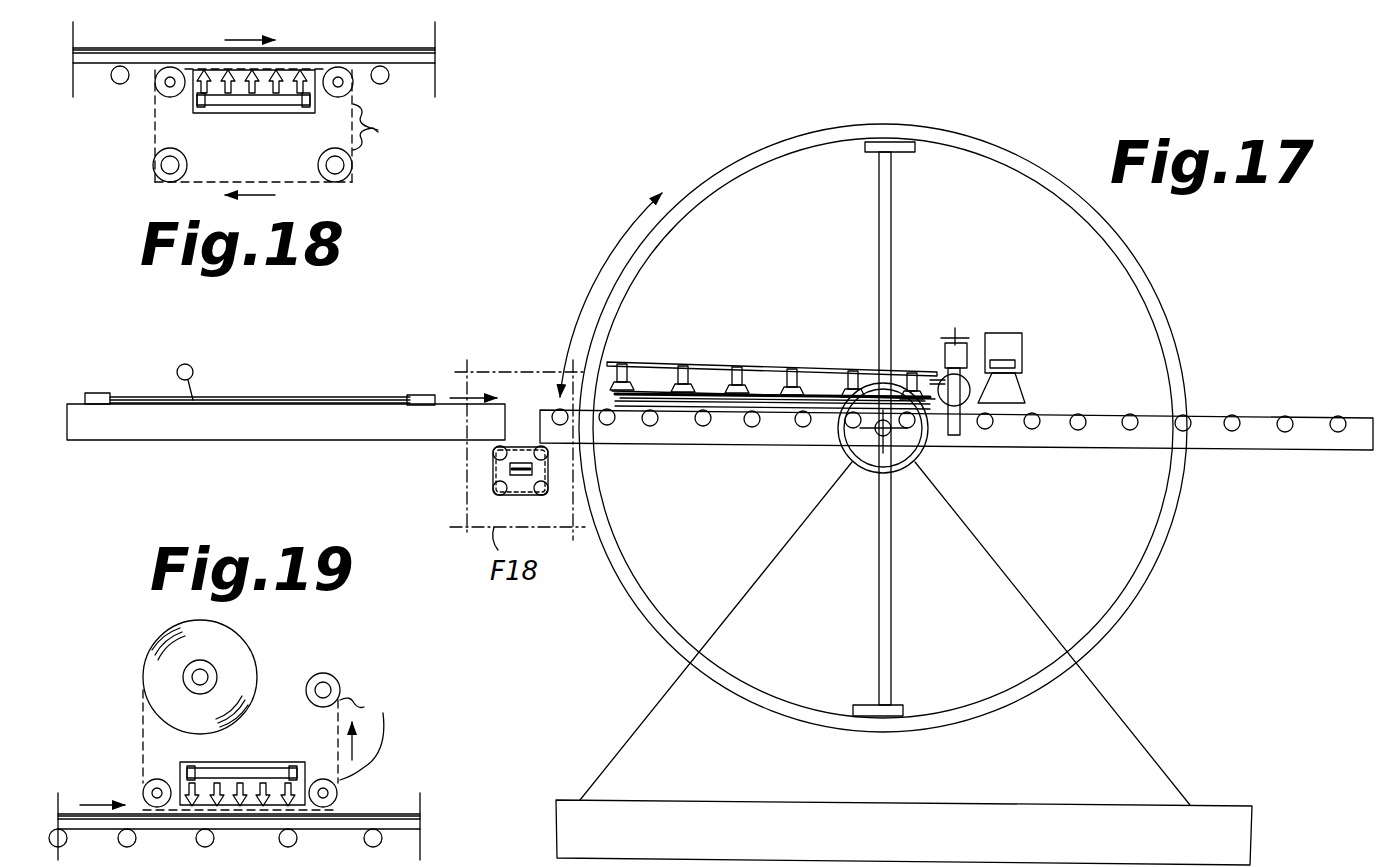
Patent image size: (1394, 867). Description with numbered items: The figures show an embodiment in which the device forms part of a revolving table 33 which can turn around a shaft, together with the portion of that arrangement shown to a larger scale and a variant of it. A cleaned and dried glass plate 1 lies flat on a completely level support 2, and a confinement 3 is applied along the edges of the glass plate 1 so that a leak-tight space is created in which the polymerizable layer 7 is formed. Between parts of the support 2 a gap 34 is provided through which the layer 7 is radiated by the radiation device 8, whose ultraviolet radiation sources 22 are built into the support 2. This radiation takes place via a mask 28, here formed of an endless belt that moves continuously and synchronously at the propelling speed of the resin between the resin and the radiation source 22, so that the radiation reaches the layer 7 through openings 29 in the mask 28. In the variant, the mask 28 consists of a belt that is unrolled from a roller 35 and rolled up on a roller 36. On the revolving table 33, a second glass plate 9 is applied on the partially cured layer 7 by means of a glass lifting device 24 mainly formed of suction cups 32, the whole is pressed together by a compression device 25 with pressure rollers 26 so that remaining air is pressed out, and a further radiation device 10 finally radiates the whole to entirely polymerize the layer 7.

In FIG. 17, the glass plate 1 is at (138, 400).
In FIG. 18, the glass plate 1 is at (433, 58).
In FIG. 19, the glass plate 1 is at (417, 825).
In FIG. 17, the support 2 is at (140, 425).
In FIG. 17, the confinement 3 is at (93, 390).
In FIG. 17, the polymerizable layer 7 is at (314, 400).
In FIG. 18, the polymerizable layer 7 is at (392, 53).
In FIG. 19, the polymerizable layer 7 is at (394, 815).
In FIG. 17, the radiation device 8 is at (465, 498).
In FIG. 18, the radiation device 8 is at (378, 183).
In FIG. 19, the radiation device 8 is at (378, 660).
In FIG. 17, the second glass plate 9 is at (653, 383).
In FIG. 17, the radiation device 10 is at (1033, 312).
In FIG. 17, the ultraviolet radiation sources 22 is at (493, 470).
In FIG. 18, the ultraviolet radiation sources 22 is at (257, 104).
In FIG. 19, the ultraviolet radiation sources 22 is at (247, 764).
In FIG. 17, the glass lifting device 24 is at (807, 363).
In FIG. 17, the compression device 25 is at (953, 322).
In FIG. 17, the pressure rollers 26 is at (948, 380).
In FIG. 17, the mask 28 is at (512, 497).
In FIG. 18, the mask 28 is at (153, 132).
In FIG. 19, the mask 28 is at (143, 734).
In FIG. 18, the openings 29 is at (389, 127).
In FIG. 19, the openings 29 is at (374, 729).
In FIG. 17, the suction cups 32 is at (773, 387).
In FIG. 17, the revolving table 33 is at (753, 163).
In FIG. 17, the gap 34 is at (522, 420).
In FIG. 19, the roller 35 is at (195, 675).
In FIG. 19, the roller 36 is at (324, 682).